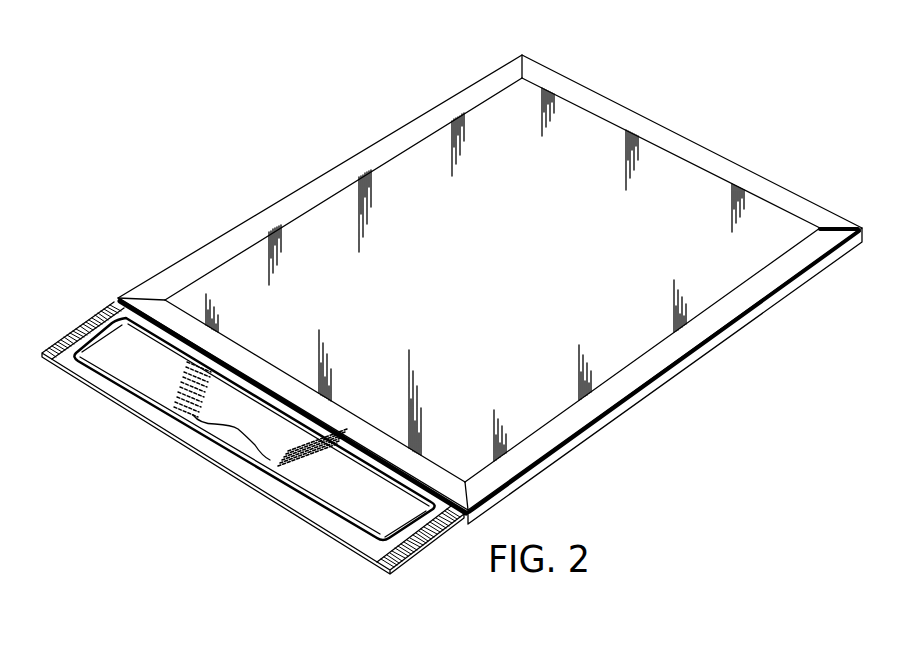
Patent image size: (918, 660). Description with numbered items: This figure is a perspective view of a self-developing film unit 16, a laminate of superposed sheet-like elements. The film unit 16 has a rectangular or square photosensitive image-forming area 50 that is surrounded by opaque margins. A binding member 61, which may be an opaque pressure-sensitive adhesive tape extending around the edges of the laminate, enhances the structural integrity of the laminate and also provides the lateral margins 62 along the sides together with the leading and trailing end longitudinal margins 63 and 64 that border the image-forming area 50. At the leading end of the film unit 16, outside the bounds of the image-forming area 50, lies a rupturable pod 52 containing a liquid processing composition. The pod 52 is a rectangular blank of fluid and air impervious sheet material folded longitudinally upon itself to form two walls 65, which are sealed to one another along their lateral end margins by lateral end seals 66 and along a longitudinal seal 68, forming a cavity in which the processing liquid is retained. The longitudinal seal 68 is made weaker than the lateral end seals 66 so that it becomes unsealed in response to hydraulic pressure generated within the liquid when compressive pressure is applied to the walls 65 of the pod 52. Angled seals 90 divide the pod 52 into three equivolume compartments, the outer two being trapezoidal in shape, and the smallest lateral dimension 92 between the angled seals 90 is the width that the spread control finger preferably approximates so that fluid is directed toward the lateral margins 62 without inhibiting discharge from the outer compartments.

The self-developing film unit 16 is at (492, 58).
The photosensitive image-forming area 50 is at (316, 209).
The rupturable pod 52 is at (421, 568).
The binding member 61 is at (698, 350).
The lateral margins 62 is at (383, 148).
The leading end longitudinal margin 63 is at (347, 425).
The trailing end longitudinal margin 64 is at (717, 166).
The pod walls 65 is at (107, 338).
The lateral end seals 66 is at (70, 337).
The longitudinal seal 68 is at (237, 377).
The angled seals 90 is at (178, 385).
The smallest lateral dimension 92 is at (231, 432).